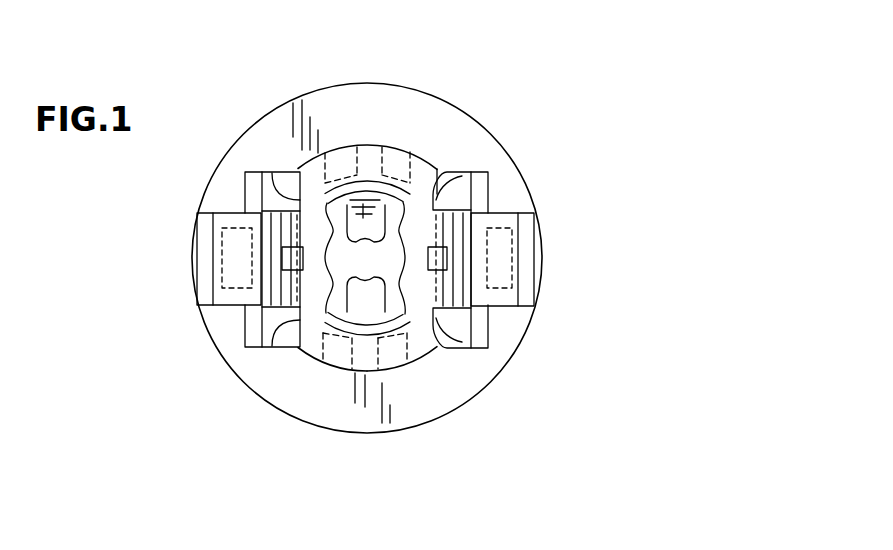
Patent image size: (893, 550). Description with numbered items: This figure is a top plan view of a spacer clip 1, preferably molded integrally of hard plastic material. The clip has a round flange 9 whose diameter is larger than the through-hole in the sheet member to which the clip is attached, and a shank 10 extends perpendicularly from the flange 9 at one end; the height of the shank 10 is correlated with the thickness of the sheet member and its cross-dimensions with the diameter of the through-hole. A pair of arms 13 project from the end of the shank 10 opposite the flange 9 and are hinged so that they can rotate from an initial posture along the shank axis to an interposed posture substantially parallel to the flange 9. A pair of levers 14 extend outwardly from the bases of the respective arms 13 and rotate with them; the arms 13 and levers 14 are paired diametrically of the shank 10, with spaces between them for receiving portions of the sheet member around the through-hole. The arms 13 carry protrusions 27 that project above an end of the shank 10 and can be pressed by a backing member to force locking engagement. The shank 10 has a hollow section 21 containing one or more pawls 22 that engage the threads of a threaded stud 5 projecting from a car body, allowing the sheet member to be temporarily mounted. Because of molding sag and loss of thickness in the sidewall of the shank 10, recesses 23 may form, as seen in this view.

The clip 1 is at (593, 103).
The threaded stud 5 is at (371, 73).
The round flange 9 is at (516, 168).
The shank 10 is at (420, 357).
The arms 13 is at (273, 172).
The levers 14 is at (212, 229).
The hollow section 21 is at (349, 209).
The pawls 22 is at (365, 258).
The recesses 23 is at (400, 175).
The protrusions 27 is at (298, 349).